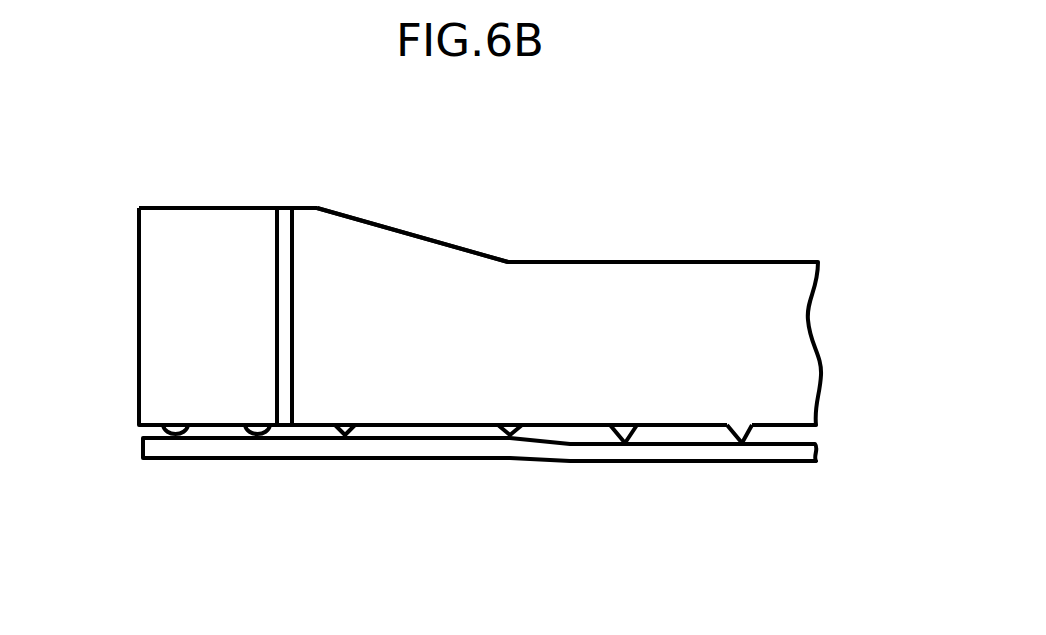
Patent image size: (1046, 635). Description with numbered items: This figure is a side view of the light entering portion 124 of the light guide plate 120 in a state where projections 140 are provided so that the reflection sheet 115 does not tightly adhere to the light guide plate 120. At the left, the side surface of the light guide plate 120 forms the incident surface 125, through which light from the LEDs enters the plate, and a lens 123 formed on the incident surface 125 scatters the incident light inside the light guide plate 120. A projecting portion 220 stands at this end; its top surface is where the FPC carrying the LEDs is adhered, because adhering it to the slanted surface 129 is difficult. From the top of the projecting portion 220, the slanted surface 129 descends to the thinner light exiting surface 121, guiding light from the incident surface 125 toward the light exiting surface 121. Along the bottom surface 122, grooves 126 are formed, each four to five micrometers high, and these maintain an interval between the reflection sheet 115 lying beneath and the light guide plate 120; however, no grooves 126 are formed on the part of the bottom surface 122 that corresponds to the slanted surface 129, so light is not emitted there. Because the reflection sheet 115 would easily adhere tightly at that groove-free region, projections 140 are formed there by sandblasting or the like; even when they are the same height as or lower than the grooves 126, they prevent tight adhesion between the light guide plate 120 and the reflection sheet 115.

The light exiting surface 121 is at (655, 260).
The projecting portion 220 is at (200, 228).
The lens 123 is at (283, 235).
The incident surface 125 is at (288, 315).
The slanted surface 129 is at (405, 232).
The reflection sheet 115 is at (460, 453).
The projection 140 is at (172, 440).
The light entering portion 124 is at (382, 440).
The light guide plate 120 is at (575, 440).
The bottom surface 122 is at (657, 440).
The groove 126 is at (742, 440).